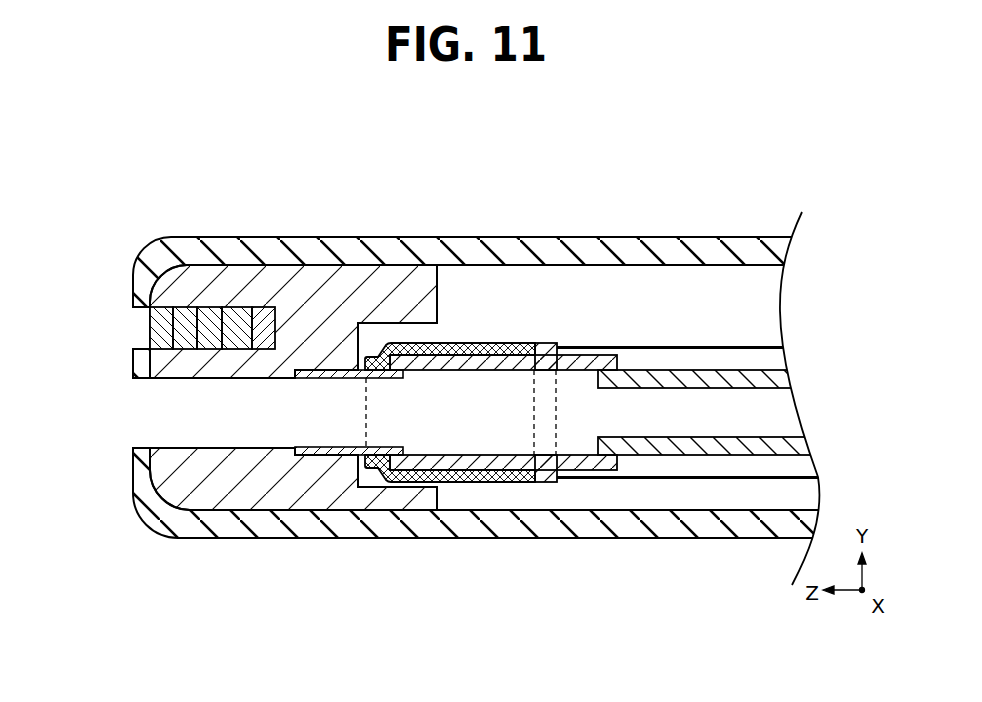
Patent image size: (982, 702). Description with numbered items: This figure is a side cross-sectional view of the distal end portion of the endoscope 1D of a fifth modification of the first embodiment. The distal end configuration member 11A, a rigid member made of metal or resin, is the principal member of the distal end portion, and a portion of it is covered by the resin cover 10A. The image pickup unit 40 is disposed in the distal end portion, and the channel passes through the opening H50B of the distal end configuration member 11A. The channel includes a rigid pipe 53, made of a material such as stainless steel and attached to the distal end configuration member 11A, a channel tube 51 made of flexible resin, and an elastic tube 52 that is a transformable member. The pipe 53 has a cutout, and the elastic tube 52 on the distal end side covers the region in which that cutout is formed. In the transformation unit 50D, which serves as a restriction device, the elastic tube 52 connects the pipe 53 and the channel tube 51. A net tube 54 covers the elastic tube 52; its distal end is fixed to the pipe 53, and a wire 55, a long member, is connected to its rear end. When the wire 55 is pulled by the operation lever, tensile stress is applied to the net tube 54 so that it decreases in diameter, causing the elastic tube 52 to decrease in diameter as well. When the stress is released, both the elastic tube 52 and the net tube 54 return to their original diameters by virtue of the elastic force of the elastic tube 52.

The endoscope 1D is at (449, 388).
The resin cover 10A is at (707, 237).
The distal end configuration member 11A is at (273, 264).
The image pickup unit 40 is at (220, 306).
The opening H50B is at (136, 413).
The transformation unit 50D is at (566, 493).
The channel tube 51 is at (668, 455).
The elastic tube 52 is at (574, 482).
The pipe 53 is at (352, 456).
The net tube 54 is at (489, 484).
The wire 55 is at (693, 470).